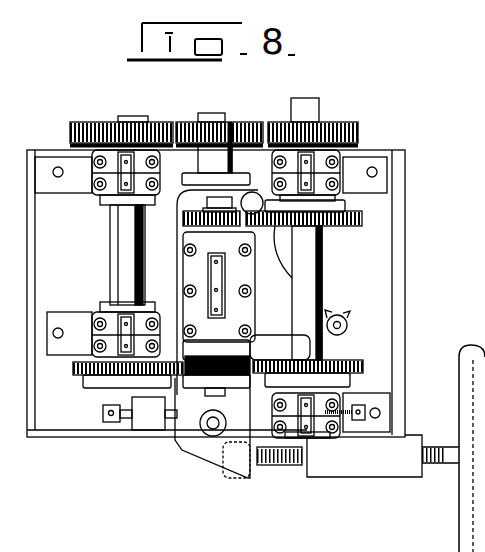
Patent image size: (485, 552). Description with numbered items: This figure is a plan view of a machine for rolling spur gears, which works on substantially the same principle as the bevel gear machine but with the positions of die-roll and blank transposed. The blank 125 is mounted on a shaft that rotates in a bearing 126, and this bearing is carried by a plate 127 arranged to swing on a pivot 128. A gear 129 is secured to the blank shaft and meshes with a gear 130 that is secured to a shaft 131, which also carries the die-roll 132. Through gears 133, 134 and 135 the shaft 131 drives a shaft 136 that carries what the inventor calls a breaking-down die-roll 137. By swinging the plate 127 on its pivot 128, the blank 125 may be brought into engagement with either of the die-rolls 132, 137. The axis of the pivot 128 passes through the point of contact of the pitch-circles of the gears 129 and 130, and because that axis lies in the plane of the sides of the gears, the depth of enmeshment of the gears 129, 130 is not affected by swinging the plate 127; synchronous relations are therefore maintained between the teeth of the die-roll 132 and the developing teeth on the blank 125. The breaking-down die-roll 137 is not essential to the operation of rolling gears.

The blank 125 is at (200, 390).
The bearing 126 is at (200, 270).
The plate 127 is at (283, 288).
The pivot 128 is at (258, 193).
The gear 129 is at (185, 218).
The gear 130 is at (307, 234).
The shaft 131 is at (320, 310).
The die-roll 132 is at (357, 362).
The gear 133 is at (352, 124).
The gear 134 is at (233, 121).
The gear 135 is at (95, 123).
The shaft 136 is at (118, 262).
The breaking-down die-roll 137 is at (85, 368).